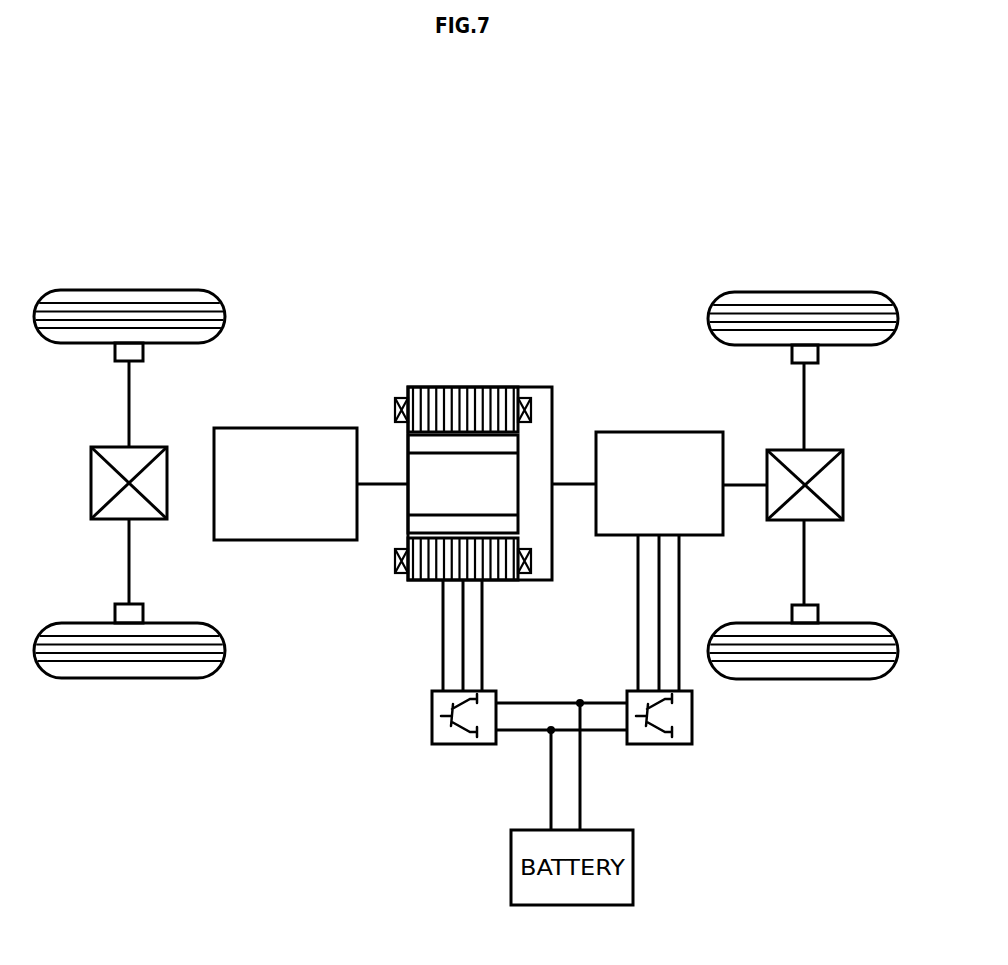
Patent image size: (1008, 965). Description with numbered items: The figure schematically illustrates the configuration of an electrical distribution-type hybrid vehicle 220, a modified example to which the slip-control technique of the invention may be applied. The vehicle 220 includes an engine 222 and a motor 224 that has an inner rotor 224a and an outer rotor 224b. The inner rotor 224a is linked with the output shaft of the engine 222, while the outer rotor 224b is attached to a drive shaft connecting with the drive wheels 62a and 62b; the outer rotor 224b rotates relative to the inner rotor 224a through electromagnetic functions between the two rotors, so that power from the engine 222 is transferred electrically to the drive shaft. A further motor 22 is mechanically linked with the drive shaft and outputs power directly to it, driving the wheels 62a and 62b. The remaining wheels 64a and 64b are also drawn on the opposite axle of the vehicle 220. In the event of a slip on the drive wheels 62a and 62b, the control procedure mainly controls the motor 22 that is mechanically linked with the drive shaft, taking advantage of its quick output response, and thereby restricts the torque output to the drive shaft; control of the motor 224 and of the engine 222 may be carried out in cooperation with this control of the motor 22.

The electrical distribution-type hybrid vehicle 220 is at (478, 358).
The engine 222 is at (285, 540).
The motor 224 is at (452, 385).
The inner rotor 224a is at (407, 465).
The outer rotor 224b is at (463, 387).
The motor 22 is at (660, 432).
The drive wheel 62a is at (805, 292).
The drive wheel 62b is at (804, 679).
The front wheel 64a is at (128, 290).
The front wheel 64b is at (129, 678).